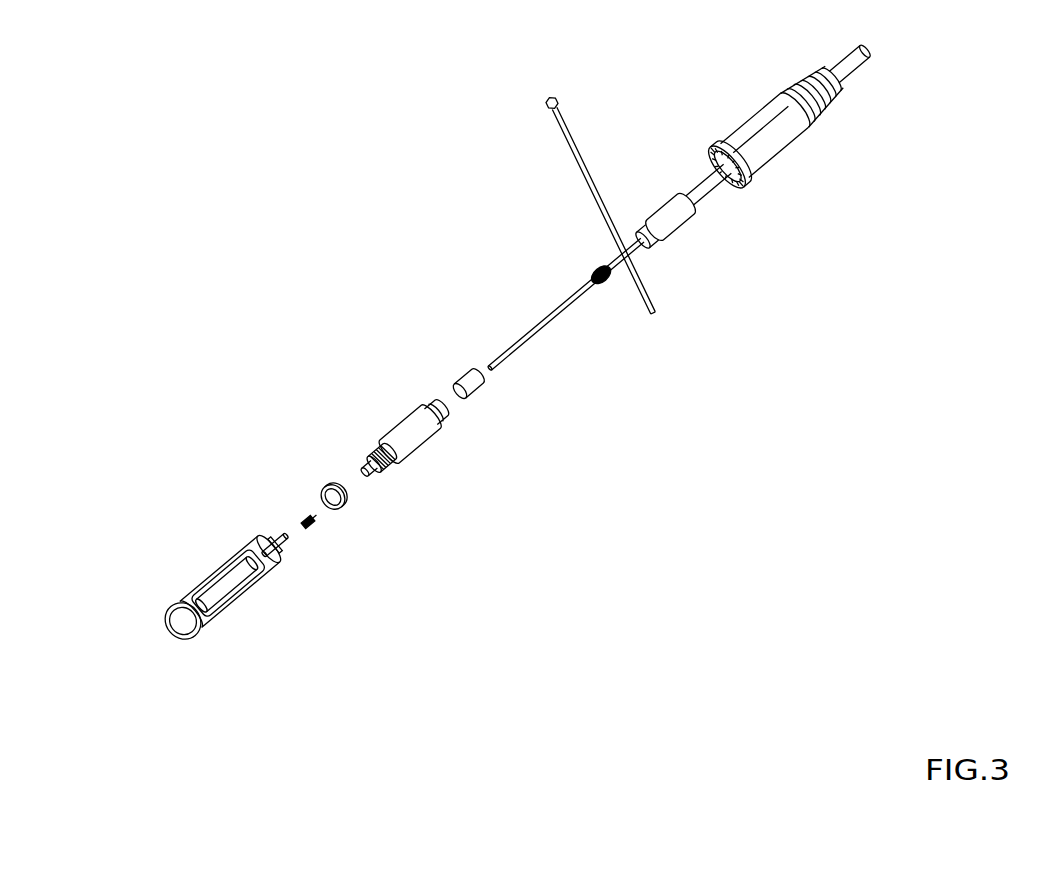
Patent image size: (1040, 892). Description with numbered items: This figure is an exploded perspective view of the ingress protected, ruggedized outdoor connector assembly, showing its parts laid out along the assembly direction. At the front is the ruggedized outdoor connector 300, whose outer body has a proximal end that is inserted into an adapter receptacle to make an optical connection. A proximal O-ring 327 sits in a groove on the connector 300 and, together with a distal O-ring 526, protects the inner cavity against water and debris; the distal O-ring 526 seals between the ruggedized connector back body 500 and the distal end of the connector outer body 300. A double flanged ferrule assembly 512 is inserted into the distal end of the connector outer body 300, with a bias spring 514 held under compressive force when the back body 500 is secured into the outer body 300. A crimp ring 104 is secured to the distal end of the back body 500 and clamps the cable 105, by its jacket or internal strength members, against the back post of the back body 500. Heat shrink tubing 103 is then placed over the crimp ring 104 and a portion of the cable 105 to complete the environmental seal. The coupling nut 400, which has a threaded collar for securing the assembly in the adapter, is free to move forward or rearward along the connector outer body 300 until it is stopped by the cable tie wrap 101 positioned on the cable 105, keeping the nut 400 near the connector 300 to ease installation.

The cable tie wrap 101 is at (573, 152).
The coupling nut 400 is at (776, 165).
The heat shrink tubing 103 is at (679, 240).
The cable 105 is at (553, 327).
The crimp ring 104 is at (492, 382).
The ruggedized connector back body 500 is at (433, 445).
The distal O-ring 526 is at (348, 503).
The bias spring 514 is at (322, 526).
The double flanged ferrule assembly 512 is at (285, 557).
The ruggedized outdoor connector 300 is at (285, 683).
The proximal O-ring 327 is at (202, 645).